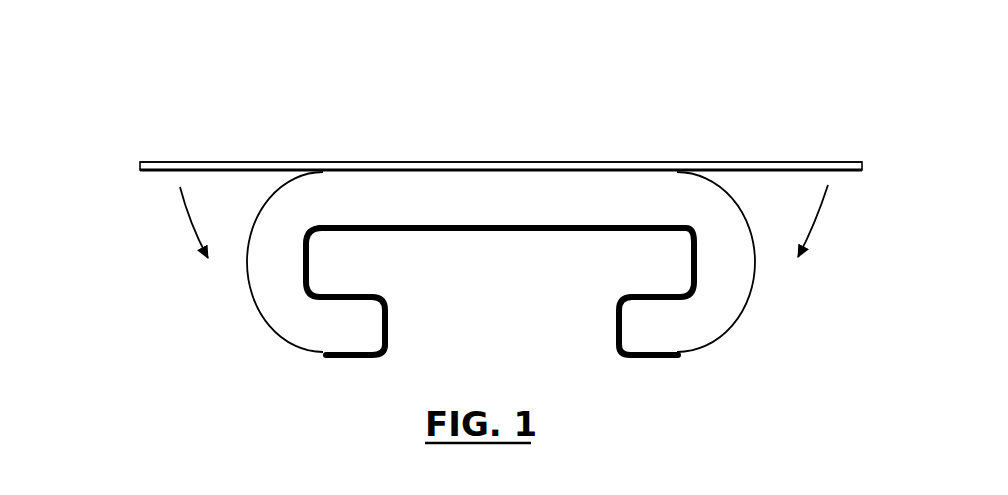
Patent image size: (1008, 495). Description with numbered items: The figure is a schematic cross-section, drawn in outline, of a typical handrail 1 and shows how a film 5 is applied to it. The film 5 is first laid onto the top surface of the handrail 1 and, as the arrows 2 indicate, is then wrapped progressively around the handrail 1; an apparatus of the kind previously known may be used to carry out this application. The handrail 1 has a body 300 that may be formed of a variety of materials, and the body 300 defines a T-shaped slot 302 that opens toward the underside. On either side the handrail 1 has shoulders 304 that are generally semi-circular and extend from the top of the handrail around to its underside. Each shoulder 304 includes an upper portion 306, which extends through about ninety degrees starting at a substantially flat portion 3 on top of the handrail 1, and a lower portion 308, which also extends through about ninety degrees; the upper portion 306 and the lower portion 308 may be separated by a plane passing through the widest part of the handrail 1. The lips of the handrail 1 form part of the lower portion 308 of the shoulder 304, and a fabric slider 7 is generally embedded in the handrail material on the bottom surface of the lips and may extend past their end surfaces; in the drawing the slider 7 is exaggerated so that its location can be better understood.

The handrail 1 is at (388, 318).
The arrows 2 is at (517, 221).
The substantially flat portion 3 is at (517, 179).
The film 5 is at (828, 163).
The fabric slider 7 is at (612, 330).
The body 300 is at (380, 192).
The T-shaped slot 302 is at (540, 292).
The shoulders 304 is at (234, 349).
The upper portion 306 is at (295, 229).
The lower portion 308 is at (315, 322).